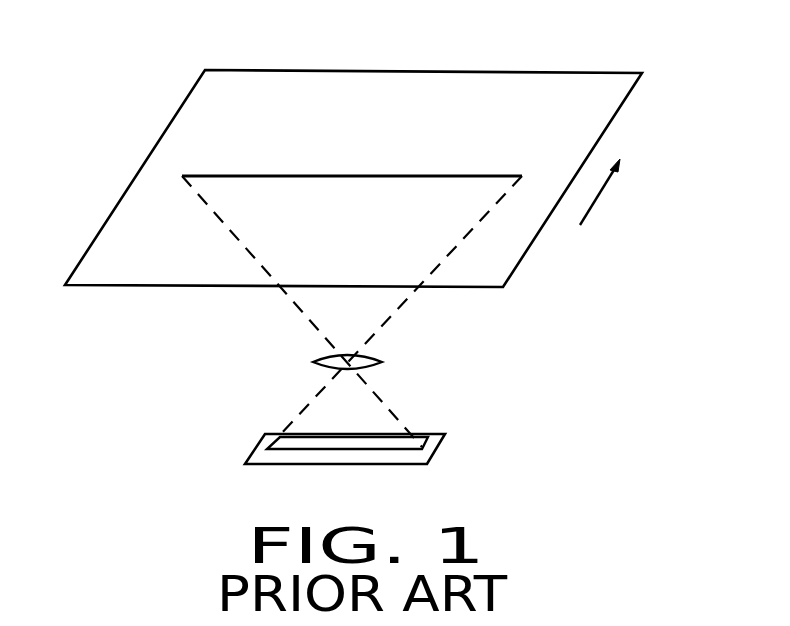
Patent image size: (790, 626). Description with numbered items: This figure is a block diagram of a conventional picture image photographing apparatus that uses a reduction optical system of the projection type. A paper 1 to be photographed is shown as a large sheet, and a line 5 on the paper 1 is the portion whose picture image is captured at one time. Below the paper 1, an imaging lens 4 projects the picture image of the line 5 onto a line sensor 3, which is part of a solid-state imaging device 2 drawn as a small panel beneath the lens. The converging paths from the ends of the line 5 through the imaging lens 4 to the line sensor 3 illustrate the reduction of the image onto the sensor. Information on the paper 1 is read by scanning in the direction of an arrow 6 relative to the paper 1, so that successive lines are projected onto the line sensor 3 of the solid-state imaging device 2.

The paper 1 is at (548, 72).
The solid-state imaging device 2 is at (438, 452).
The line sensor 3 is at (308, 450).
The imaging lens 4 is at (382, 360).
The line 5 is at (423, 175).
The arrow 6 is at (590, 208).